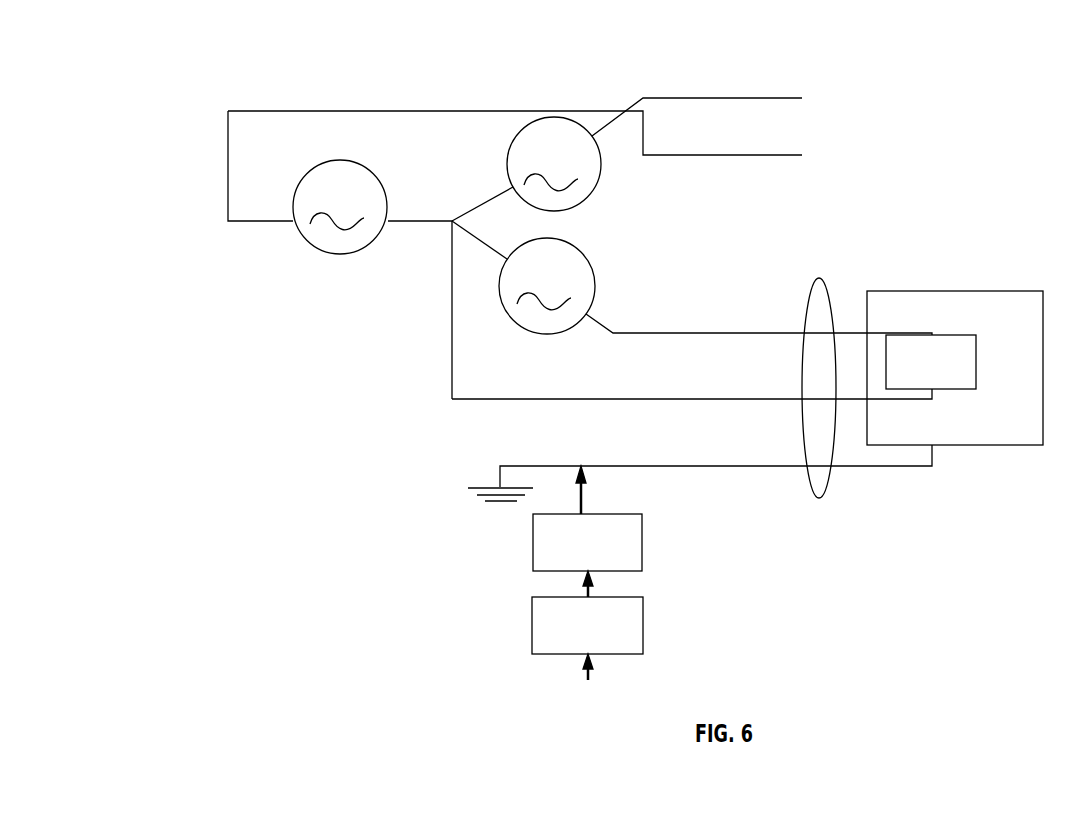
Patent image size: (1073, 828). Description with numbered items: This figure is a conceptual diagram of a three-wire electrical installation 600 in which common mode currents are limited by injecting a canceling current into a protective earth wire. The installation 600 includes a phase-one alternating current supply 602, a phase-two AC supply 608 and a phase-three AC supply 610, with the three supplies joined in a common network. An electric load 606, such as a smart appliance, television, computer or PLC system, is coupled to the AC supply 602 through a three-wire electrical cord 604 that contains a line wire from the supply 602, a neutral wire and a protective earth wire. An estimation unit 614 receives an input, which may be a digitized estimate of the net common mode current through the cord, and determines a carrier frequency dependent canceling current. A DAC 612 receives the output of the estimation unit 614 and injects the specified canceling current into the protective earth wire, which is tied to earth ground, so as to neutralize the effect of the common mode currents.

The 3-wire electrical installation 600 is at (268, 42).
The phase 1 alternating current (AC) supply 602 is at (540, 334).
The 3-wire electrical cord 604 is at (819, 498).
The electric load 606 is at (976, 360).
The phase 2 AC supply 608 is at (315, 255).
The phase 3 AC supply 610 is at (505, 160).
The DAC 612 is at (642, 545).
The estimation unit 614 is at (643, 628).